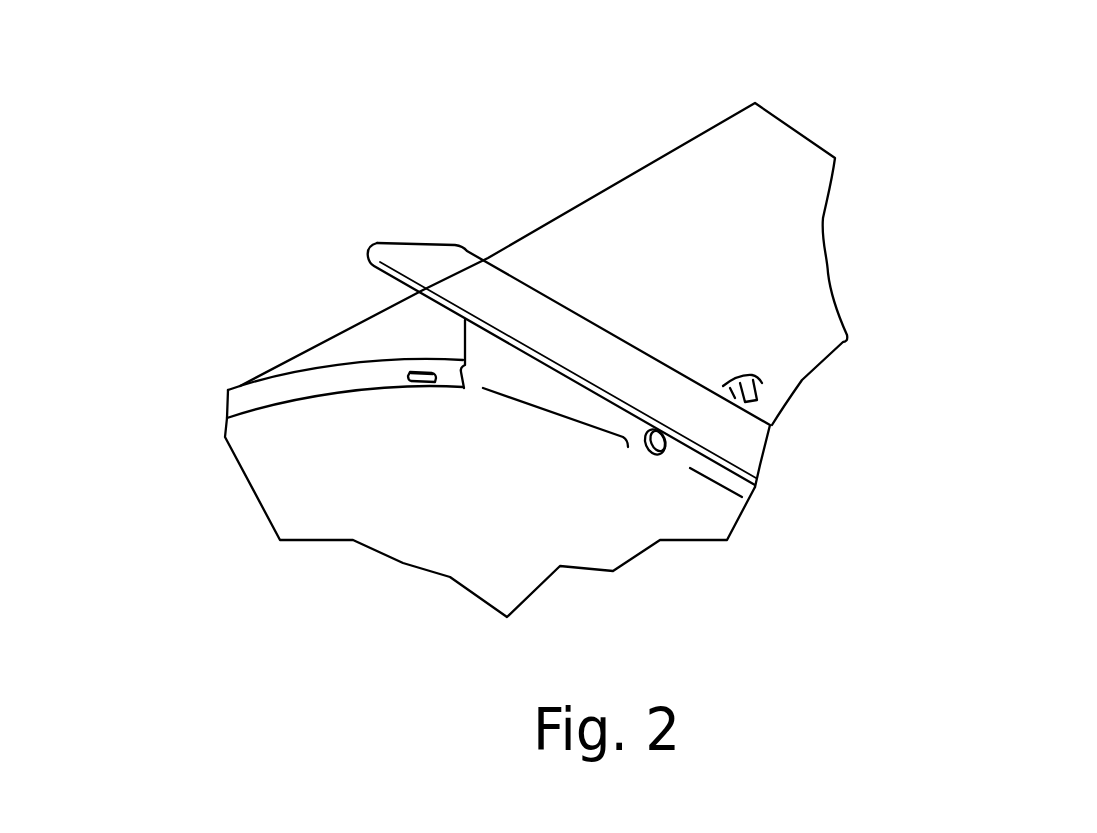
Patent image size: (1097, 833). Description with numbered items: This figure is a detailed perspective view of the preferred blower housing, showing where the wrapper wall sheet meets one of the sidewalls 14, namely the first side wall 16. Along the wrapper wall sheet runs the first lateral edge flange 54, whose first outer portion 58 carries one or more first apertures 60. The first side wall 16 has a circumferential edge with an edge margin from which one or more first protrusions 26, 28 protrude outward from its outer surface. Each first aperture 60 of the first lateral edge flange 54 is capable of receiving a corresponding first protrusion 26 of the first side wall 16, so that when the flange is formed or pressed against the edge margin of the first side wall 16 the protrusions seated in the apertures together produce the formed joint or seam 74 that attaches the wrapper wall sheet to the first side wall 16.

The sidewalls 14 is at (536, 365).
The first side wall 16 is at (350, 513).
The first protrusions 26 is at (488, 320).
The molding strip 28 is at (427, 370).
The first lateral edge flange 54 is at (295, 353).
The first outer portion 58 is at (270, 382).
The first apertures 60 is at (410, 371).
The formed joint or seam 74 is at (417, 364).